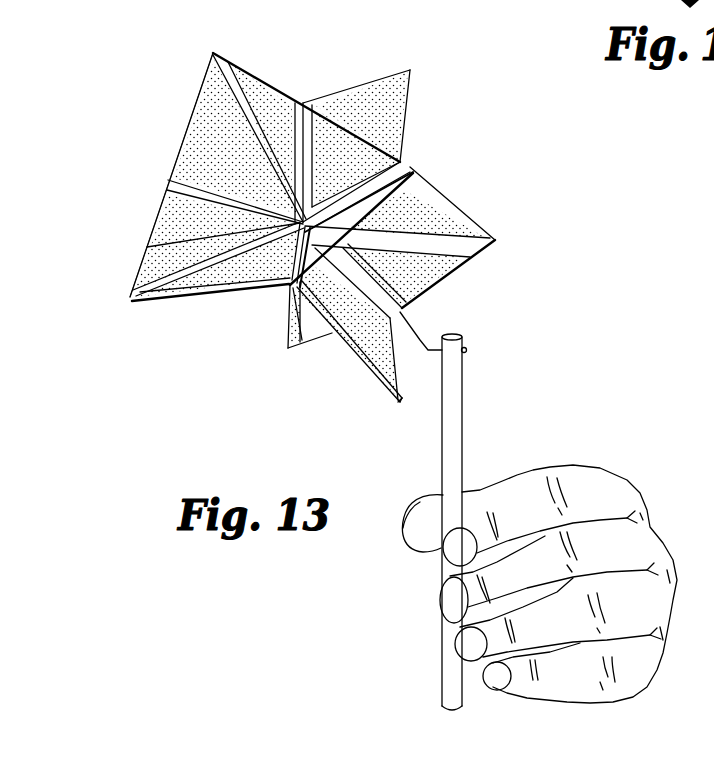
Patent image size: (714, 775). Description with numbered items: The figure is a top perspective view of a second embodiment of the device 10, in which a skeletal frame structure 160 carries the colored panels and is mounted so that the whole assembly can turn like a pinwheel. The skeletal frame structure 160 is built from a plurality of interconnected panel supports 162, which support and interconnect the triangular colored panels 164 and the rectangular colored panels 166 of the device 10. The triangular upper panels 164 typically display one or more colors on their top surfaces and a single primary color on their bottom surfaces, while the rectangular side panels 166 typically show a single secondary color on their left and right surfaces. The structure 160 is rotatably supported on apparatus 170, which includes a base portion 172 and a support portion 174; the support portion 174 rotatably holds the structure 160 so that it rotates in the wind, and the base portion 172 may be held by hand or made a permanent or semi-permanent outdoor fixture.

The panel support 162 is at (210, 64).
The triangular colored panel 164 is at (263, 78).
The rectangular colored panel 166 is at (392, 72).
The skeletal frame structure 160 is at (120, 298).
The apparatus 170 is at (475, 314).
The base portion 172 is at (463, 430).
The support portion 174 is at (423, 370).
The device 10 is at (458, 38).